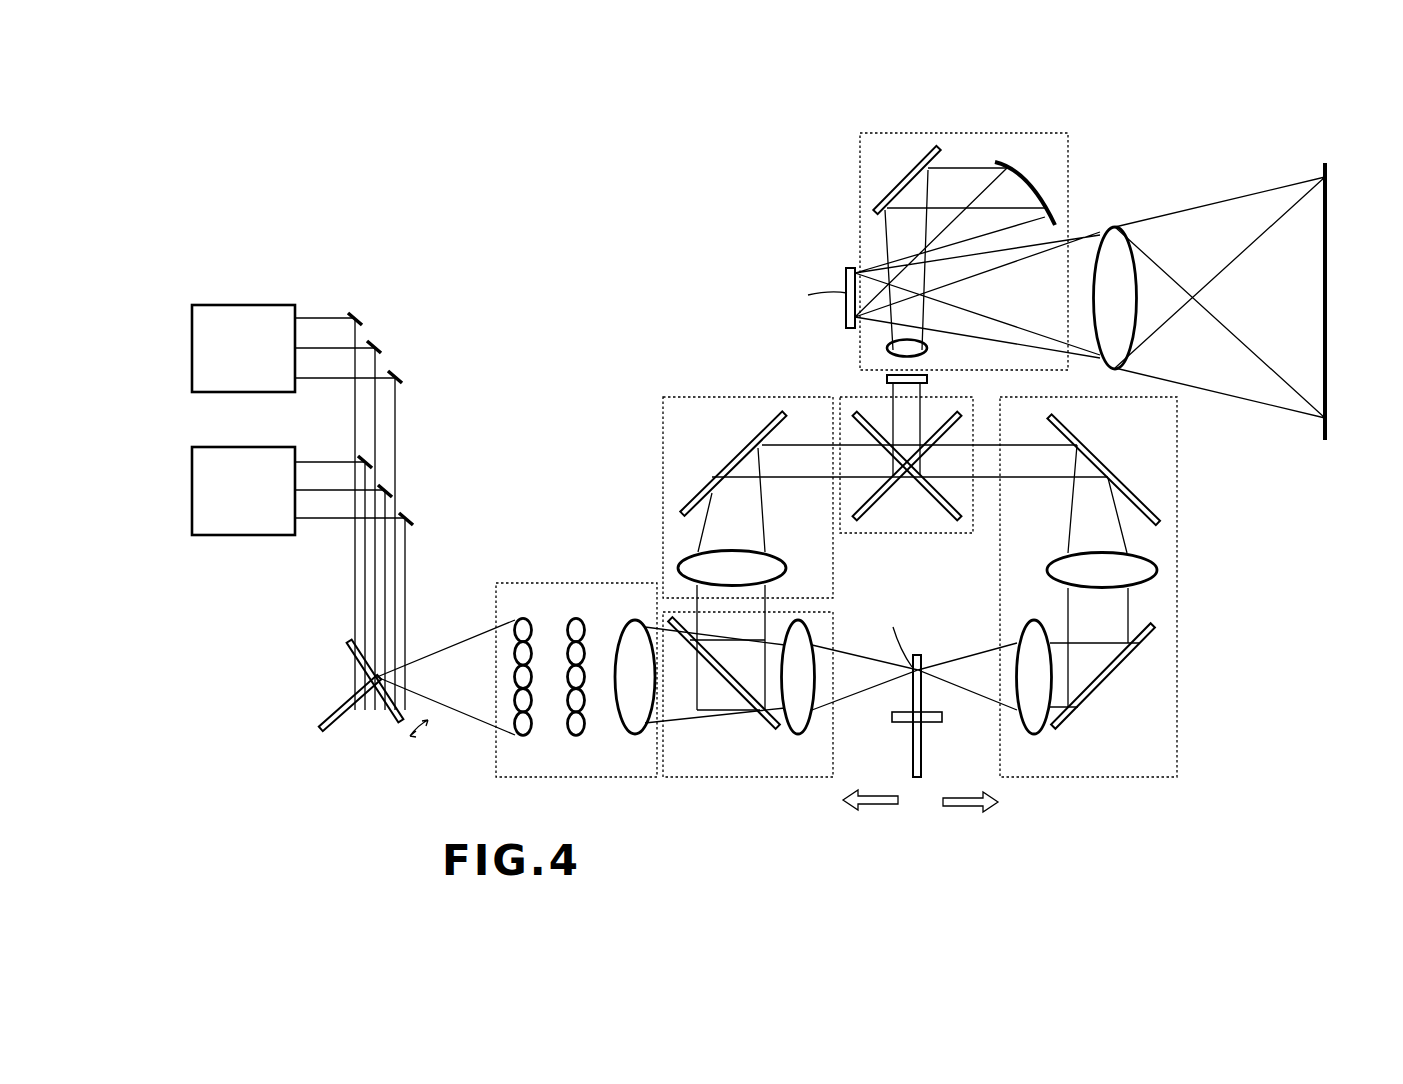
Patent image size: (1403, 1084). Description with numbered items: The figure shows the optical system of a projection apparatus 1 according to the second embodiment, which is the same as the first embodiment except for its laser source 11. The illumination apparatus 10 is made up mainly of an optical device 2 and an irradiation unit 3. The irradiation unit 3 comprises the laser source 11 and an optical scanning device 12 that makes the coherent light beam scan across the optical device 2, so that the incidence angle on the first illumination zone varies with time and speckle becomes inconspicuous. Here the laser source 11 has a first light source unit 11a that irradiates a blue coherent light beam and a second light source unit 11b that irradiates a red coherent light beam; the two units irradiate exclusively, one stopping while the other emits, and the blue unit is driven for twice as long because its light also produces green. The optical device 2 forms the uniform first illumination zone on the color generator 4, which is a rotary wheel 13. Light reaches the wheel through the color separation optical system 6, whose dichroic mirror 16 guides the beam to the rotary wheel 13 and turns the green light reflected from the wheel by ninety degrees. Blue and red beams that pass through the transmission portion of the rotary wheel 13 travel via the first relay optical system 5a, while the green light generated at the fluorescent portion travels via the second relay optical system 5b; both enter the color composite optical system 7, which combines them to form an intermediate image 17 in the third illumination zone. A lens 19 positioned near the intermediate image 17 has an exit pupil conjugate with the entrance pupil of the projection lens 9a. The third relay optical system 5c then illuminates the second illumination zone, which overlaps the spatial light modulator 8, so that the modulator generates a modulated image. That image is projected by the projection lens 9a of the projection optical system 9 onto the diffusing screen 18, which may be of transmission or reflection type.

The projection apparatus 1 is at (320, 815).
The optical device 2 is at (572, 583).
The irradiation unit 3 is at (255, 565).
The color generator 4 is at (918, 777).
The rotary wheel 13 is at (865, 751).
The first relay optical system 5a is at (1177, 703).
The second relay optical system 5b is at (665, 440).
The third relay optical system 5c is at (858, 147).
The color separation optical system 6 is at (723, 777).
The color composite optical system 7 is at (927, 533).
The spatial light modulator 8 is at (850, 277).
The projection optical system 9 is at (1185, 228).
The projection lens 9a is at (1115, 247).
The illumination apparatus 10 is at (437, 395).
The laser source 11 is at (352, 278).
The first light source unit 11a is at (222, 304).
The second light source unit 11b is at (222, 446).
The optical scanning device 12 is at (372, 678).
The dichroic mirror 16 is at (760, 722).
The intermediate image 17 is at (885, 383).
The diffusing screen 18 is at (1323, 423).
The lens 19 is at (900, 347).